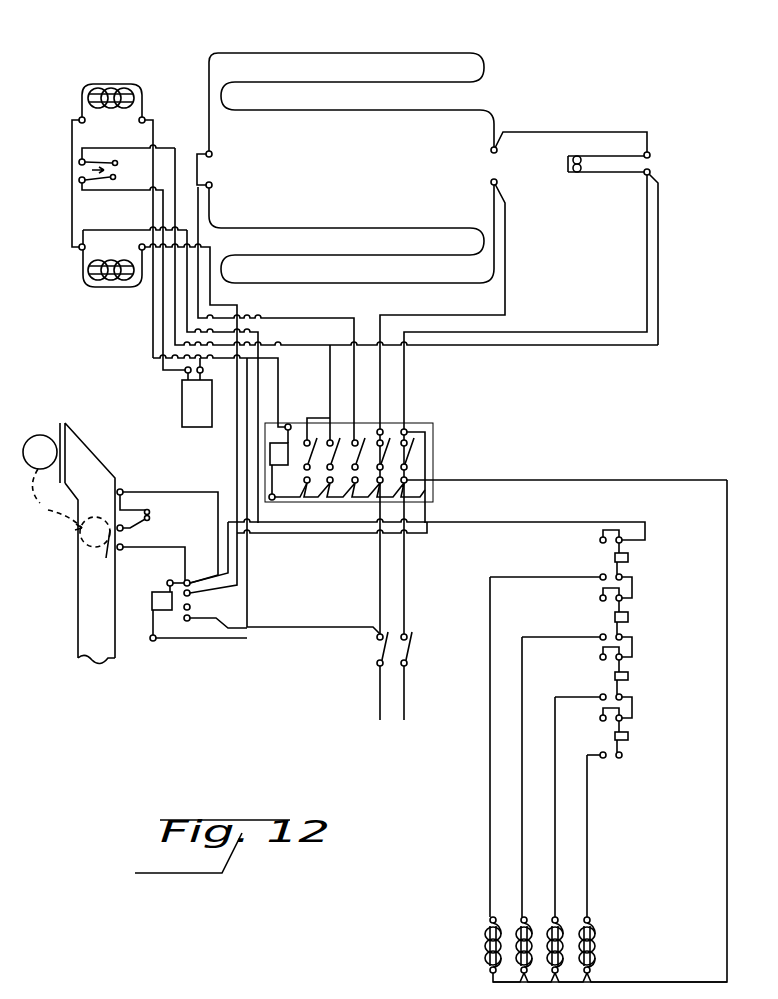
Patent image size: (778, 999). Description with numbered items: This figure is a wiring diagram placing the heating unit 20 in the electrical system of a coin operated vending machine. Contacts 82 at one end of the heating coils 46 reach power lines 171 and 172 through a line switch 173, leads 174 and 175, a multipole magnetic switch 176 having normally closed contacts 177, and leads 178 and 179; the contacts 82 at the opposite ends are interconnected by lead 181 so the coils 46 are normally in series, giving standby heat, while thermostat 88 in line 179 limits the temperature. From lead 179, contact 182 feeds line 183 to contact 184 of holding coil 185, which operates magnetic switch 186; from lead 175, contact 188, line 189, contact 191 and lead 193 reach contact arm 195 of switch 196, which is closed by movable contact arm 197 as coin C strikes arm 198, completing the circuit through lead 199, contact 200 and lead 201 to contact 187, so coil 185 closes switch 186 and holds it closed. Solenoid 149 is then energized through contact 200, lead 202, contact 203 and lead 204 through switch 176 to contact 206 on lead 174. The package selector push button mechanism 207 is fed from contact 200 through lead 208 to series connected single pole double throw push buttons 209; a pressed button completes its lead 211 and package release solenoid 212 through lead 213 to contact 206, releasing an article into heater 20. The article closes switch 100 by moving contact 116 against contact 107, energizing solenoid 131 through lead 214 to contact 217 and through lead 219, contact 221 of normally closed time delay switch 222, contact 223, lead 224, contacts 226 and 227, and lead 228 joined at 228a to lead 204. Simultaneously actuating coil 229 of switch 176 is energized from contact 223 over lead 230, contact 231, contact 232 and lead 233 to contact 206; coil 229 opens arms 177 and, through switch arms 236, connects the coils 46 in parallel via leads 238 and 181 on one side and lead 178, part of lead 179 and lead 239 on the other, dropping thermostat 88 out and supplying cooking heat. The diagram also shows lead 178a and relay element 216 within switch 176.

The heating unit 20 is at (516, 86).
The heating coils 46 is at (414, 52).
The contacts 82 is at (212, 153).
The thermostat 88 is at (606, 176).
The switch 100 is at (78, 168).
The contact 107 is at (115, 160).
The contact 116 is at (113, 180).
The solenoid 131 is at (112, 90).
The solenoid 149 is at (112, 268).
The power line 171 is at (378, 694).
The power line 172 is at (407, 694).
The line switch 173 is at (386, 648).
The lead 174 is at (406, 586).
The lead 175 is at (377, 592).
The multipole magnetic switch 176 is at (444, 437).
The normally closed contacts 177 is at (408, 455).
The lead 178 is at (508, 270).
The conductor 178a is at (352, 420).
The lead 179 is at (592, 131).
The lead 181 is at (199, 168).
The contact 182 is at (408, 430).
The line 183 is at (430, 436).
The contact 184 is at (150, 638).
The holding coil 185 is at (152, 596).
The magnetic switch 186 is at (176, 628).
The contact 187 is at (167, 580).
The contact 188 is at (376, 640).
The line 189 is at (276, 629).
The contact 191 is at (186, 624).
The lead 193 is at (170, 490).
The contact arm 195 is at (134, 483).
The switch 196 is at (150, 516).
The movable contact arm 197 is at (138, 527).
The arm 198 is at (104, 552).
The lead 199 is at (180, 546).
The contact 200 is at (190, 580).
The lead 201 is at (172, 580).
The lead 202 is at (246, 496).
The contact 203 is at (139, 247).
The lead 204 is at (82, 228).
The contact 206 is at (408, 478).
The package selector push button mechanism 207 is at (588, 642).
The lead 208 is at (570, 518).
The push buttons 209 is at (630, 618).
The lead 211 is at (587, 805).
The package release solenoid 212 is at (580, 952).
The lead 213 is at (556, 476).
The lead 214 is at (176, 146).
The relay contact 216 is at (368, 500).
The contact 217 is at (410, 484).
The lead 219 is at (160, 328).
The contact 221 is at (183, 373).
The time delay switch 222 is at (180, 419).
The contact 223 is at (218, 368).
The lead 224 is at (155, 122).
The contact 226 is at (145, 117).
The contact 227 is at (78, 118).
The lead 228 is at (72, 204).
The connection point 228a is at (80, 250).
The actuating coil 229 is at (268, 455).
The lead 230 is at (284, 375).
The contact 231 is at (290, 424).
The contact 232 is at (278, 489).
The lead 233 is at (355, 500).
The switch arms 236 is at (350, 430).
The lead 238 is at (284, 318).
The lead 239 is at (560, 346).
The coin C is at (34, 505).